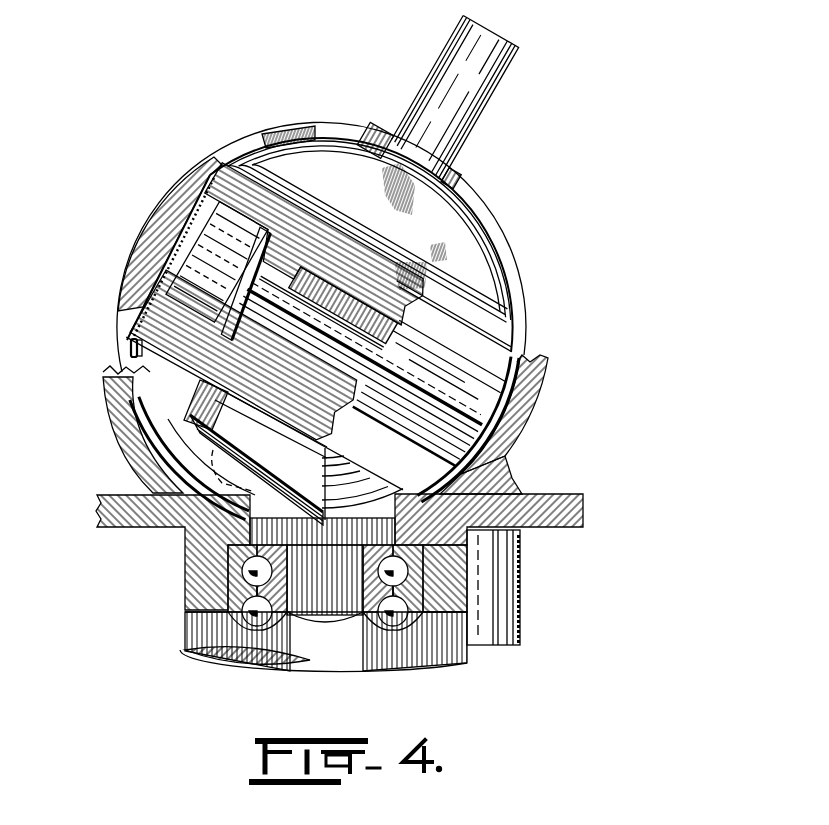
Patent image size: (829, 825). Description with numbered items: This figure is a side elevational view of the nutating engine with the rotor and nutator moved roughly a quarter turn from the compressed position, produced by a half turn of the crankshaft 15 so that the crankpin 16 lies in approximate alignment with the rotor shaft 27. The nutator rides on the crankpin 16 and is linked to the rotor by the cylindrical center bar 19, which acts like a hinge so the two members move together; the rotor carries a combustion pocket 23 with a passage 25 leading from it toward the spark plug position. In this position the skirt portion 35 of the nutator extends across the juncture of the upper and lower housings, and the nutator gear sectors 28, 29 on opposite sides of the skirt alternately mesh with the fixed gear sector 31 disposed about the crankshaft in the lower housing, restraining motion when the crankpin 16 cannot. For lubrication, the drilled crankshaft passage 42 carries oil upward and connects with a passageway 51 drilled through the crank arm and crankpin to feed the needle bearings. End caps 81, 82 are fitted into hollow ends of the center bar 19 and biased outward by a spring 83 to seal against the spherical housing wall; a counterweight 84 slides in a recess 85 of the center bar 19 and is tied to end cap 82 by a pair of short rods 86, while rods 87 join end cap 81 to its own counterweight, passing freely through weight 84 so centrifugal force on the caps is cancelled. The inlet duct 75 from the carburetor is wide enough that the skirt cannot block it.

The crankshaft 15 is at (310, 622).
The crankpin 16 is at (202, 376).
The center bar 19 is at (482, 373).
The combustion pocket 23 is at (462, 271).
The passage 25 is at (398, 133).
The rotor shaft 27 is at (497, 92).
The nutator gear sector 28 is at (428, 510).
The nutator gear sector 29 is at (130, 349).
The fixed gear sector 31 is at (470, 537).
The skirt portion 35 is at (470, 467).
The drilled crankshaft passage 42 is at (350, 612).
The passageway 51 is at (213, 450).
The inlet duct 75 is at (515, 607).
The end cap 81 is at (157, 217).
The end cap 82 is at (520, 404).
The spring 83 is at (132, 287).
The counterweight 84 is at (205, 190).
The recess 85 is at (140, 261).
The short rods 86 is at (272, 287).
The rods 87 is at (141, 349).